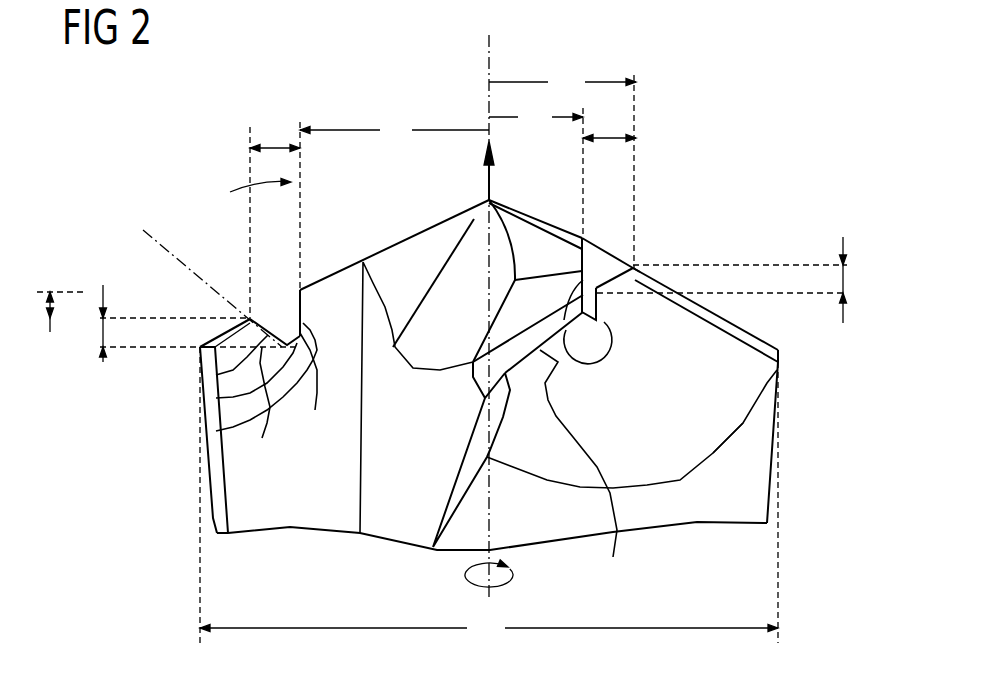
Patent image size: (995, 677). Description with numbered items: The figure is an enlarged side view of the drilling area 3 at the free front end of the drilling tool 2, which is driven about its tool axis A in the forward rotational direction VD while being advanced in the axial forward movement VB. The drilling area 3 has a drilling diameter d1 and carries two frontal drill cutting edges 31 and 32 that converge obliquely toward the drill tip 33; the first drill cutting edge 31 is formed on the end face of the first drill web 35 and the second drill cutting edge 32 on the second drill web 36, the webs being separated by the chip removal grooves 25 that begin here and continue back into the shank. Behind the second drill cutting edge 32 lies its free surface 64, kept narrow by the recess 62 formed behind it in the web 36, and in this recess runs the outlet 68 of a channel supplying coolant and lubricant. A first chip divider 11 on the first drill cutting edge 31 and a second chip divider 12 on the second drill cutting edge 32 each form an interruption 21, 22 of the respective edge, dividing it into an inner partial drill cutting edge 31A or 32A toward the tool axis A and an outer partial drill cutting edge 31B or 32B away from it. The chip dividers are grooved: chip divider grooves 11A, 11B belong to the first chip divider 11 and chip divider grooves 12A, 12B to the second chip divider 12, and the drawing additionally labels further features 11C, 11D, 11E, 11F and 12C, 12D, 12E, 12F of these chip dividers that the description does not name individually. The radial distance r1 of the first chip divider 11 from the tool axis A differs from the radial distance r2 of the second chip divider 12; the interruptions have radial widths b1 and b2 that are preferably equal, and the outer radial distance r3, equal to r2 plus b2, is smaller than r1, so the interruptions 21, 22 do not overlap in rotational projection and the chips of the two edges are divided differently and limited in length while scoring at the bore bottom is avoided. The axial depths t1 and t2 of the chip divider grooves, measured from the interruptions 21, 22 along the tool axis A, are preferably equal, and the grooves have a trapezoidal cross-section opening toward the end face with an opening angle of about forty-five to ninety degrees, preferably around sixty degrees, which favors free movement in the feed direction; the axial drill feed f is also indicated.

The drilling tool 2 is at (168, 584).
The drilling area 3 is at (366, 84).
The first chip divider 11 is at (290, 332).
The chip divider groove 11A is at (216, 431).
The chip divider groove 11B is at (216, 375).
The first cutting edge portion 11C is at (216, 398).
The first cutting edge corner portion 11D is at (302, 310).
The first cutting edge portion 11E is at (315, 410).
The first cutting edge portion 11F is at (262, 438).
The second chip divider 12 is at (593, 273).
The chip divider groove 12A is at (558, 362).
The chip divider groove 12B is at (623, 297).
The second cutting edge portion 12C is at (615, 361).
The second cutting edge portion 12D is at (583, 287).
The second cutting edge portion 12E is at (594, 289).
The second cutting edge portion 12F is at (633, 267).
The interruption 21 is at (299, 292).
The interruption 22 is at (581, 245).
The chip removal groove 25 is at (300, 490).
The first drill cutting edge 31 is at (317, 283).
The inner partial drill cutting edge 31A is at (342, 268).
The outer partial drill cutting edge 31B is at (230, 333).
The second drill cutting edge 32 is at (690, 307).
The inner partial drill cutting edge 32A is at (531, 215).
The outer partial drill cutting edge 32B is at (737, 317).
The drill tip 33 is at (487, 200).
The first drill web 35 is at (213, 495).
The second drill web 36 is at (780, 380).
The recess 62 is at (773, 486).
The free surface 64 is at (737, 338).
The outlet 68 is at (584, 473).
The tool axis A is at (491, 48).
The forward movement VB is at (483, 178).
The forward rotational direction VD is at (465, 578).
The drilling diameter d1 is at (489, 495).
The radial distance r1 is at (394, 134).
The radial distance r2 is at (536, 171).
The outer radial distance r3 is at (562, 169).
The width of the chip divider b1 is at (275, 219).
The width of the chip divider b2 is at (609, 125).
The axial depth of the chip divider t1 is at (184, 323).
The axial depth of the chip divider t2 is at (736, 280).
The axial drill feed f is at (55, 312).